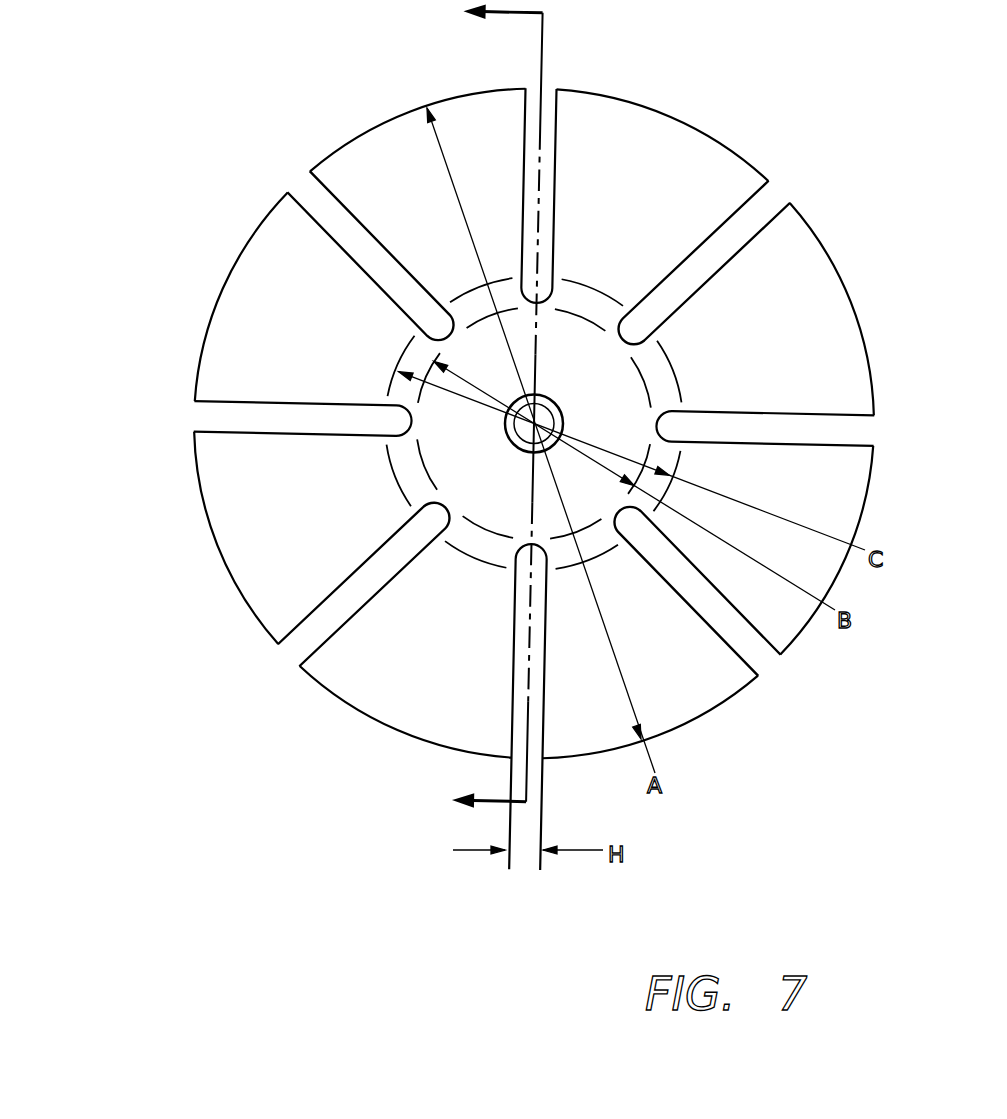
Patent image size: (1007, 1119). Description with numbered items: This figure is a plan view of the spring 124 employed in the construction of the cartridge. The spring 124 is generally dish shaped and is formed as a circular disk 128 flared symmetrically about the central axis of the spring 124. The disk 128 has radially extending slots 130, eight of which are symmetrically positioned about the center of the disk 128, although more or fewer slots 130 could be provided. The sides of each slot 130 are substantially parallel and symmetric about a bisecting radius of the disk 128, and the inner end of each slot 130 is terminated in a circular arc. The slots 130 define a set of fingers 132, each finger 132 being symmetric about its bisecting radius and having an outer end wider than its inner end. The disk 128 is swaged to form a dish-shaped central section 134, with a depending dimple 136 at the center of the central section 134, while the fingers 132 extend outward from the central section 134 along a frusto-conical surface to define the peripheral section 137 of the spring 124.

The spring 124 is at (615, 90).
The circular disk 128 is at (377, 125).
The slots 130 is at (343, 205).
The fingers 132 is at (862, 335).
The central section 134 is at (582, 315).
The dimple 136 is at (548, 403).
The peripheral section 137 is at (720, 140).